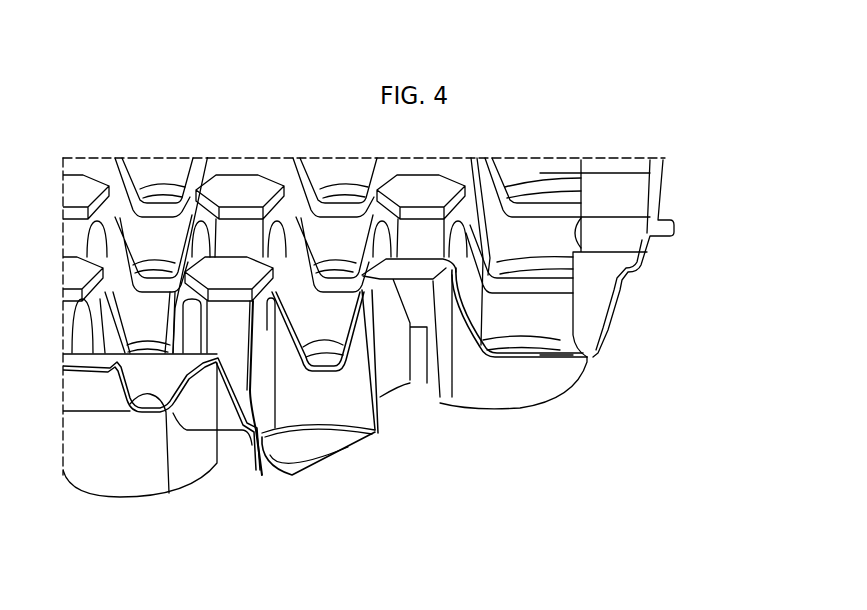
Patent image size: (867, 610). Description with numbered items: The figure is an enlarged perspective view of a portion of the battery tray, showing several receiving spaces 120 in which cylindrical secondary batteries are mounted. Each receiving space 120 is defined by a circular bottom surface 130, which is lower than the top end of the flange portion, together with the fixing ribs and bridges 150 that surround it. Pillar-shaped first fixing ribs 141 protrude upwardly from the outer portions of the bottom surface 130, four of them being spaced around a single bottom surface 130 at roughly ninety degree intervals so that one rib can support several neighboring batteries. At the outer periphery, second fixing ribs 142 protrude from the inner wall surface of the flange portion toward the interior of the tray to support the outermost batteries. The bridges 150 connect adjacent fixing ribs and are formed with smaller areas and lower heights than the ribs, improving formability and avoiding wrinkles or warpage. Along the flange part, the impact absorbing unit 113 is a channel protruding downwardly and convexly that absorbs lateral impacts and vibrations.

The impact absorbing unit 113 is at (168, 440).
The receiving space 120 is at (302, 400).
The bottom surface 130 is at (315, 445).
The first fixing rib 141 is at (218, 278).
The second fixing rib 142 is at (612, 237).
The bridge 150 is at (333, 362).